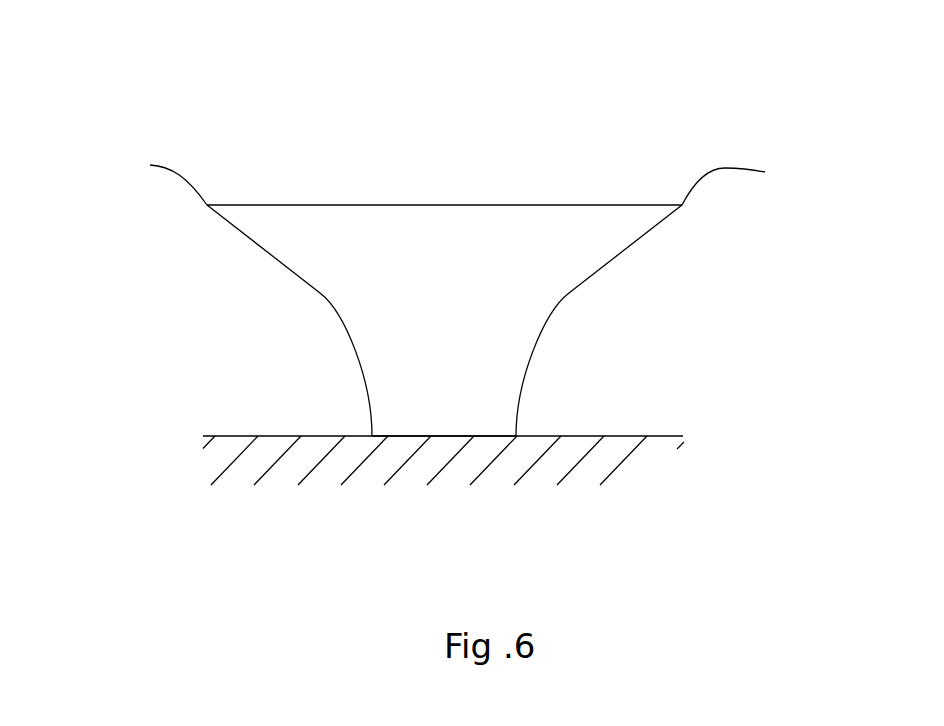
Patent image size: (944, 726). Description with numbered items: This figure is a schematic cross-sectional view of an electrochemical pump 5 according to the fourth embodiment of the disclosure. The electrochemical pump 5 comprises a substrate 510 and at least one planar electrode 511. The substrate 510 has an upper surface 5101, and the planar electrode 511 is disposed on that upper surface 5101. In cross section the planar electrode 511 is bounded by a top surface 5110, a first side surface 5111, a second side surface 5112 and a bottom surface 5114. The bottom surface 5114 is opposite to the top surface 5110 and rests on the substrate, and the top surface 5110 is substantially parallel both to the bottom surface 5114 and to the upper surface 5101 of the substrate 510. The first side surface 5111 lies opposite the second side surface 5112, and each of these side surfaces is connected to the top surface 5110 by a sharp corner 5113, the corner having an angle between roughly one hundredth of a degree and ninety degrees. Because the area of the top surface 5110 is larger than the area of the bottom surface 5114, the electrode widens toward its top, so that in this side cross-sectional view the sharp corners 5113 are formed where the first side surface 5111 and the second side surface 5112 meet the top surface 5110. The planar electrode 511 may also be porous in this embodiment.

The electrochemical pump 5 is at (138, 24).
The substrate 510 is at (625, 455).
The upper surface 5101 is at (258, 436).
The planar electrode 511 is at (543, 220).
The top surface 5110 is at (443, 205).
The first side surface 5111 is at (318, 293).
The second side surface 5112 is at (570, 292).
The sharp corner 5113 is at (456, 184).
The bottom surface 5114 is at (451, 436).